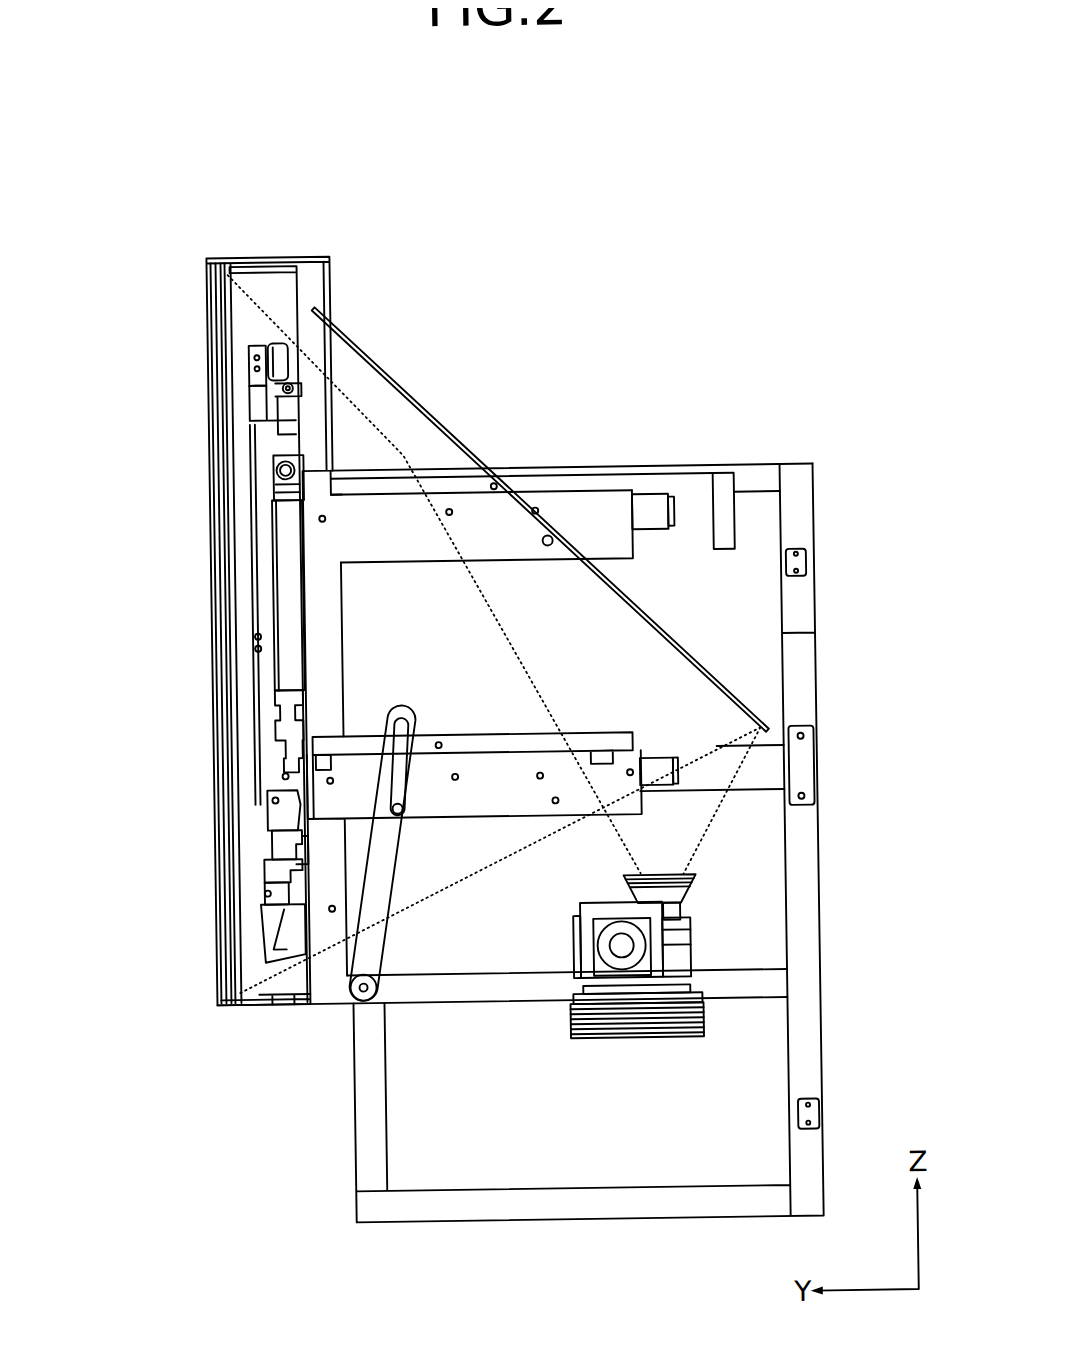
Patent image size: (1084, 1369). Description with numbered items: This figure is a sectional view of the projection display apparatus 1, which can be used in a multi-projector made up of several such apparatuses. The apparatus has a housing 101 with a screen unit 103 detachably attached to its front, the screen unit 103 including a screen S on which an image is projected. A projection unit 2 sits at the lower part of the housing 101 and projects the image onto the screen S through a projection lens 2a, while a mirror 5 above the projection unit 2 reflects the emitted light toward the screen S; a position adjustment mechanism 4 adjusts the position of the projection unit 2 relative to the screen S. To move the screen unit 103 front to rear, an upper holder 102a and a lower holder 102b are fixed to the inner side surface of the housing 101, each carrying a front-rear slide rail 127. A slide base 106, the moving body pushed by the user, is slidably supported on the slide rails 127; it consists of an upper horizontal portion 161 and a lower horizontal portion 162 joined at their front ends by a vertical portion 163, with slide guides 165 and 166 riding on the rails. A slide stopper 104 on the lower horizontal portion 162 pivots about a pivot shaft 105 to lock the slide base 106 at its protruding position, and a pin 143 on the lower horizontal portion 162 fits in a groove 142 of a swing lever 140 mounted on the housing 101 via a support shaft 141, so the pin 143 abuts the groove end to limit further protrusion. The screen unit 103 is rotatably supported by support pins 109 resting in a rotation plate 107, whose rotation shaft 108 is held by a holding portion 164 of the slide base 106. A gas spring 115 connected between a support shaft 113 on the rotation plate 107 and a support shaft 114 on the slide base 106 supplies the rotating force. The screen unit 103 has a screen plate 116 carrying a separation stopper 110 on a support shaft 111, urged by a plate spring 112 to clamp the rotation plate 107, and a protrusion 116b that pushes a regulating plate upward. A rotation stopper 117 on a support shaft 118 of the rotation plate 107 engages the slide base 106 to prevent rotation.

The projection display apparatus 1 is at (704, 284).
The projection unit 2 is at (687, 945).
The projection lens 2a is at (695, 887).
The position adjustment mechanism 4 is at (698, 1024).
The mirror 5 is at (688, 649).
The housing 101 is at (816, 511).
The upper holder 102a is at (716, 500).
The lower holder 102b is at (753, 766).
The screen unit 103 is at (201, 485).
The slide stopper 104 is at (518, 743).
The pivot shaft 105 is at (438, 743).
The slide base 106 is at (536, 492).
The rotation plate 107 is at (293, 359).
The rotation shaft 108 is at (303, 386).
The support pin 109 is at (289, 343).
The separation stopper 110 is at (262, 919).
The support shaft 111 is at (266, 889).
The plate spring 112 is at (291, 929).
The support shaft 113 is at (322, 467).
The support shaft 114 is at (284, 773).
The gas spring 115 is at (294, 599).
The screen plate 116 is at (264, 581).
The protrusion 116b is at (288, 858).
The rotation stopper 117 is at (272, 814).
The support shaft 118 is at (274, 796).
The slide rail 127 is at (681, 514).
The swing lever 140 is at (387, 933).
The support shaft 141 is at (368, 990).
The groove 142 is at (400, 718).
The pin 143 is at (397, 808).
The upper horizontal portion 161 is at (608, 543).
The lower horizontal portion 162 is at (514, 793).
The vertical portion 163 is at (344, 637).
The holding portion 164 is at (278, 409).
The slide guide 165 is at (658, 519).
The slide guide 166 is at (655, 764).
The screen S is at (209, 658).